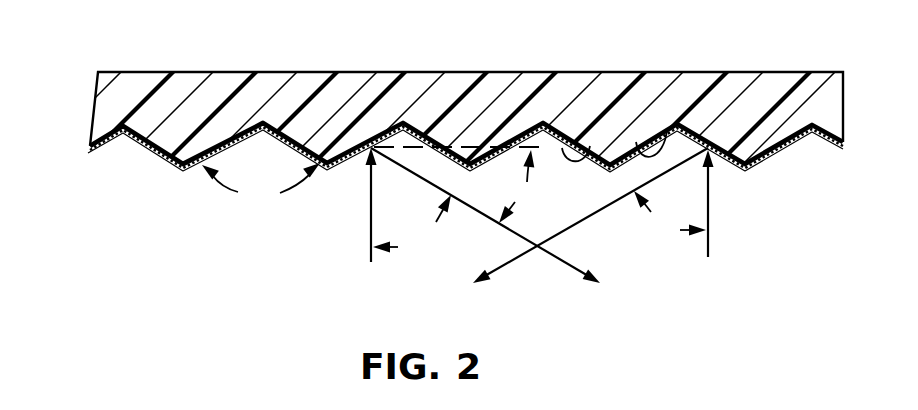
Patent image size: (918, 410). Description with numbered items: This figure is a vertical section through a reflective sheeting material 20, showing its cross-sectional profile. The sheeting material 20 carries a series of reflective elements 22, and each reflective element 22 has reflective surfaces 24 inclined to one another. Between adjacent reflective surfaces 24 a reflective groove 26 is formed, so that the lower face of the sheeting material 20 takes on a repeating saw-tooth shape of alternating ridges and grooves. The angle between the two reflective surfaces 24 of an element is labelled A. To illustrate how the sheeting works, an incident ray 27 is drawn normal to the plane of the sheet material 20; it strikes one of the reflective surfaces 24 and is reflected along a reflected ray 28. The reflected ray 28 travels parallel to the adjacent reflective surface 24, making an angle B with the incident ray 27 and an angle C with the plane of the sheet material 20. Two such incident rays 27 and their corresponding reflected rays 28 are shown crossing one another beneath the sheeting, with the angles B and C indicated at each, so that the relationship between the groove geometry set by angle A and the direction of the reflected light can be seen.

The reflective sheeting material 20 is at (782, 92).
The reflective element 22 is at (205, 142).
The reflective surface 24 is at (562, 148).
The reflective groove 26 is at (402, 150).
The incident ray 27 is at (371, 205).
The reflected ray 28 is at (510, 228).
The angle between reflective surfaces A is at (261, 187).
The angle between reflected ray and incident ray B is at (539, 223).
The angle between reflected ray and sheet plane C is at (457, 185).